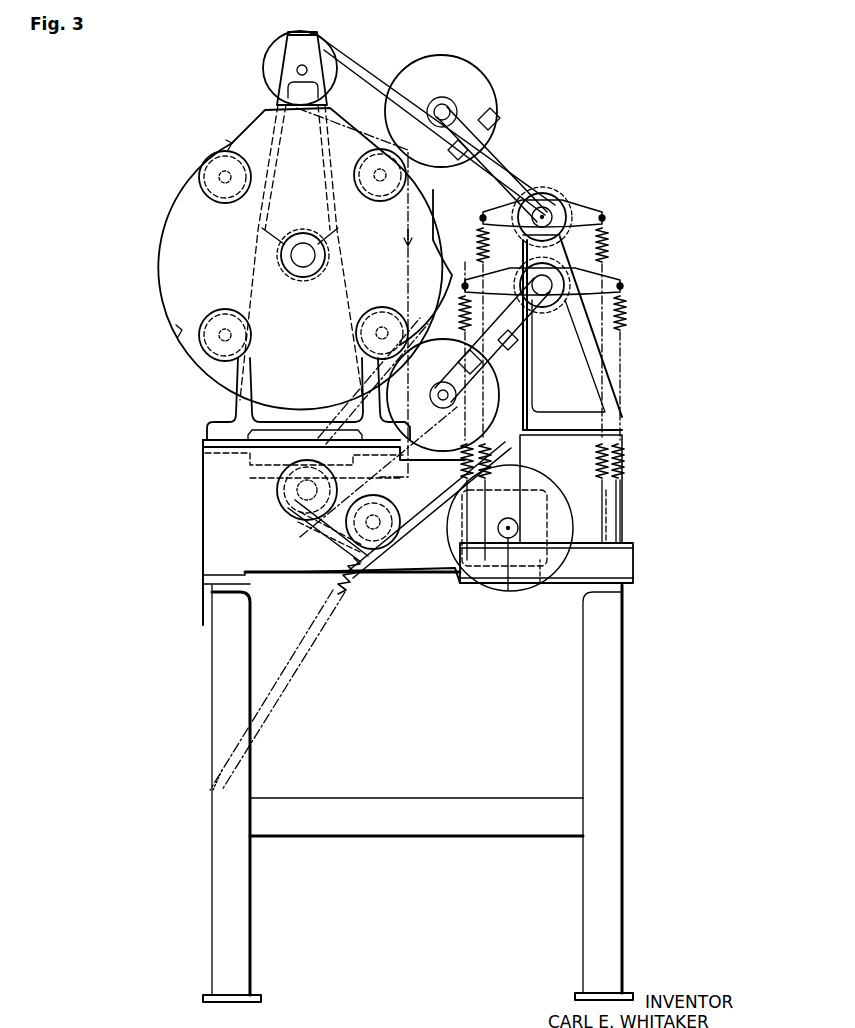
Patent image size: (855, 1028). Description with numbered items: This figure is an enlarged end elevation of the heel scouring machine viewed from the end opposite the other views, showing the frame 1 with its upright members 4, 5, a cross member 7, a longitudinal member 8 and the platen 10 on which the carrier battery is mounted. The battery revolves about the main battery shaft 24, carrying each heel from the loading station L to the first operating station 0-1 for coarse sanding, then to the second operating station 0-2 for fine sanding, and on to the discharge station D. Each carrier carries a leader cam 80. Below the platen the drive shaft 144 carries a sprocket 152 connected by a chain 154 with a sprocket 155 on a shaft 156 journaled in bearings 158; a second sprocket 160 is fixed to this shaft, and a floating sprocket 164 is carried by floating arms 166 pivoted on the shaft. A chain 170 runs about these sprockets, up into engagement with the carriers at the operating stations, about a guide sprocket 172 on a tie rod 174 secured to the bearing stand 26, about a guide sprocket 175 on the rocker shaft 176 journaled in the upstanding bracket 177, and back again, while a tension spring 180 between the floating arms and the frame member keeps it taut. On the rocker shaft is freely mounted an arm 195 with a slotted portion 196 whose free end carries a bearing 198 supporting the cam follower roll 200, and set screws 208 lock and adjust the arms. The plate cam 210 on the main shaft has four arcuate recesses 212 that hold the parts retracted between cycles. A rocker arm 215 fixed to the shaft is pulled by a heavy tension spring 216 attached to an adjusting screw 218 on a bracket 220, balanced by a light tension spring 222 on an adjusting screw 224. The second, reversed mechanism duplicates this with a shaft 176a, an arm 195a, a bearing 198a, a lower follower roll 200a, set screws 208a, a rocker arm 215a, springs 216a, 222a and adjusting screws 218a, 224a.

The frame 1 is at (195, 870).
The upright member 4 is at (248, 901).
The upright member 5 is at (590, 887).
The cross member 7 is at (403, 834).
The longitudinal member 8 is at (212, 816).
The platen 10 is at (222, 552).
The main battery shaft 24 is at (303, 266).
The bearing stand 26 is at (272, 52).
The leader cam 80 is at (212, 208).
The drive shaft 144 is at (510, 590).
The sprocket 152 is at (405, 492).
The chain 154 is at (455, 578).
The sprocket 155 is at (280, 504).
The shaft 156 is at (290, 515).
The bearings 158 is at (255, 466).
The second sprocket 160 is at (275, 490).
The floating sprocket 164 is at (386, 505).
The floating arms 166 is at (330, 530).
The chain 170 is at (380, 62).
The guide sprocket 172 is at (268, 64).
The tie rod or shaft 174 is at (297, 74).
The guide sprocket 175 is at (524, 192).
The rocker shaft 176 is at (546, 214).
The shaft 176a is at (540, 310).
The upstanding bracket 177 is at (622, 425).
The tension spring 180 is at (340, 585).
The arm 195 is at (430, 114).
The arm 195a is at (451, 361).
The slotted portion 196 is at (456, 104).
The bearing 198 is at (434, 102).
The bearing 198a is at (446, 410).
The cam follower roll 200 is at (476, 72).
The cam follower roll 200a is at (430, 403).
The set screws 208 is at (448, 148).
The set screws 208a is at (448, 355).
The plate cam 210 is at (158, 268).
The arcuate recesses 212 is at (230, 143).
The rocker arm 215 is at (584, 214).
The rocker arm 215a is at (612, 282).
The tension spring 216 is at (476, 248).
The tension spring 216a is at (628, 300).
The adjusting screw 218 is at (490, 510).
The adjusting screw 218a is at (612, 496).
The bracket 220 is at (540, 585).
The tension spring 222 is at (610, 246).
The tension spring 222a is at (462, 268).
The adjusting screw 224 is at (606, 512).
The adjusting screw 224a is at (460, 520).
The loading station L is at (176, 176).
The discharge station D is at (196, 376).
The first operating station 0-1 is at (436, 180).
The second operating station 0-2 is at (400, 395).